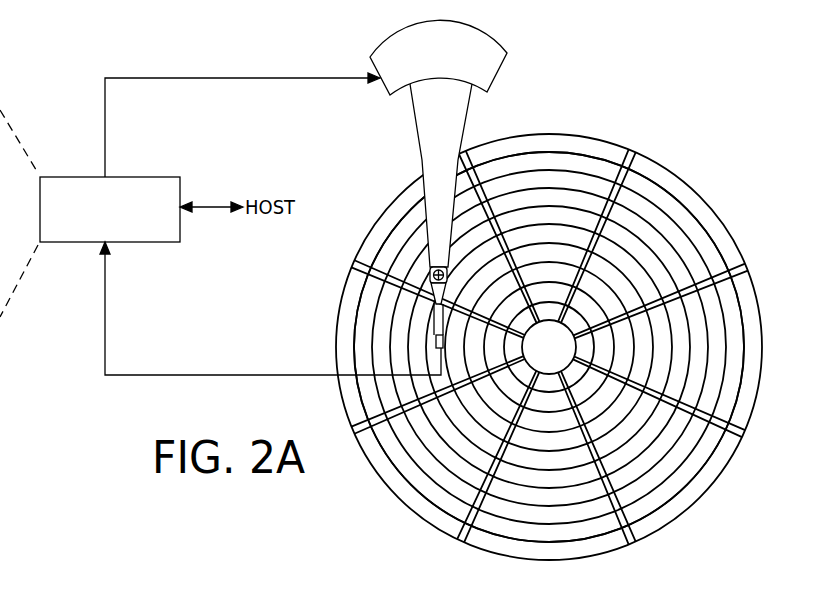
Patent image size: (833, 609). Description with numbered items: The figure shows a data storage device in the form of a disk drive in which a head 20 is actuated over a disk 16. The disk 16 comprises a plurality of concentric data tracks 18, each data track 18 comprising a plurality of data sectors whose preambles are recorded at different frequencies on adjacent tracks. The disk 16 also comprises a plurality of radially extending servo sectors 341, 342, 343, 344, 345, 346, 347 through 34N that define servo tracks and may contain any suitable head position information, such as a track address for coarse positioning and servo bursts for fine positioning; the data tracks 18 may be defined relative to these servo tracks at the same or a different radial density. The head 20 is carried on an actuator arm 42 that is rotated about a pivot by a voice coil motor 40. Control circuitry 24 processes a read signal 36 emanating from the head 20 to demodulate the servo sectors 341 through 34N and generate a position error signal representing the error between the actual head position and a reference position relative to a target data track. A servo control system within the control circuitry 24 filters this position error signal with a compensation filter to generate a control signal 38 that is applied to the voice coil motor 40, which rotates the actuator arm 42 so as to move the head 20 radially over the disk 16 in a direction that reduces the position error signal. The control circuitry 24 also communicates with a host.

The disk 16 is at (695, 184).
The data track 18 is at (548, 160).
The head 20 is at (433, 341).
The control circuitry 24 is at (146, 177).
The servo sector 341 is at (632, 158).
The servo sector 342 is at (738, 270).
The servo sector 343 is at (738, 433).
The servo sector 344 is at (630, 543).
The servo sector 345 is at (462, 538).
The servo sector 346 is at (358, 430).
The servo sector 347 is at (358, 260).
The servo sector 34N is at (470, 155).
The read signal 36 is at (205, 375).
The control signal 38 is at (105, 132).
The voice coil motor 40 is at (385, 86).
The actuator arm 42 is at (425, 163).